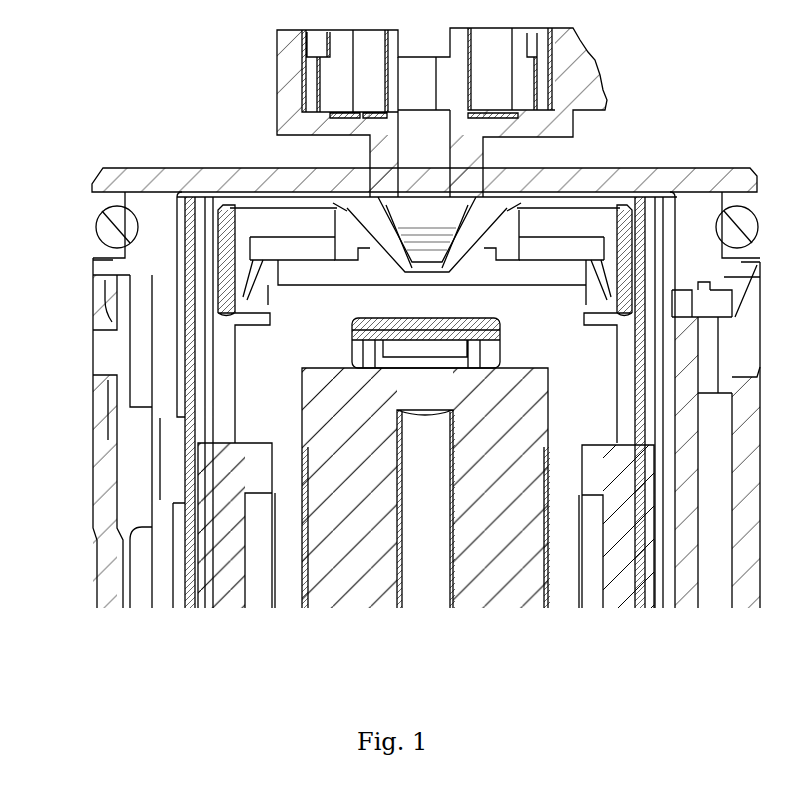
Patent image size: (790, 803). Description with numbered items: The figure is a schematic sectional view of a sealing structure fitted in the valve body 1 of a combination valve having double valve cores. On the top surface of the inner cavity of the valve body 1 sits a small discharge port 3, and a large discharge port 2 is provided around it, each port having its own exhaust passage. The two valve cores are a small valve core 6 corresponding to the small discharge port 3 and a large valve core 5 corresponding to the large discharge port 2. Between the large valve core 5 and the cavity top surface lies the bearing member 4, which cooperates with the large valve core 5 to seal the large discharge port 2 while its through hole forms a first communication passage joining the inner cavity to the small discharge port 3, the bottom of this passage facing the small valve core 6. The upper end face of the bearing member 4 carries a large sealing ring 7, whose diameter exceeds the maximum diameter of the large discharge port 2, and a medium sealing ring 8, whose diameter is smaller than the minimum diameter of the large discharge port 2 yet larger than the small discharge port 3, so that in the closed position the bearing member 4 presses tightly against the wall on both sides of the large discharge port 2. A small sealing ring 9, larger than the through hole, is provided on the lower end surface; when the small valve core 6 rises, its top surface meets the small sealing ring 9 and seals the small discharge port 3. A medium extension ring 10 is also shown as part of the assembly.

The valve body 1 is at (237, 183).
The large discharge port 2 is at (348, 181).
The small discharge port 3 is at (432, 160).
The bearing member 4 is at (362, 233).
The large valve core 5 is at (255, 257).
The small valve core 6 is at (391, 330).
The large sealing ring 7 is at (243, 465).
The medium sealing ring 8 is at (505, 213).
The small sealing ring 9 is at (468, 217).
The medium extension ring 10 is at (441, 265).